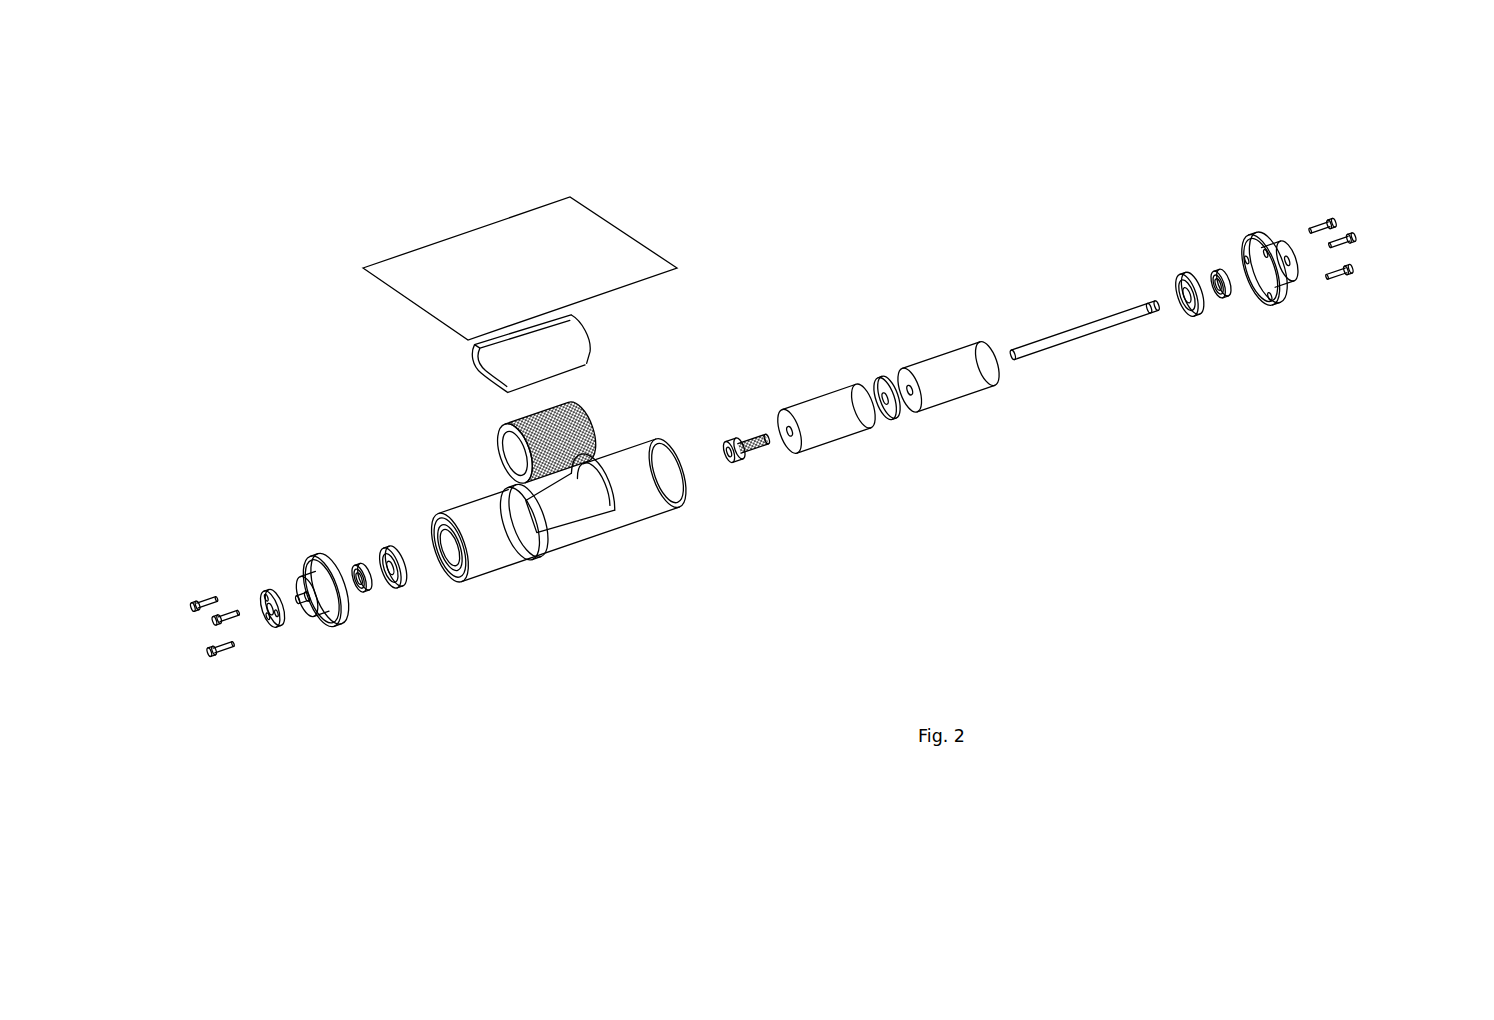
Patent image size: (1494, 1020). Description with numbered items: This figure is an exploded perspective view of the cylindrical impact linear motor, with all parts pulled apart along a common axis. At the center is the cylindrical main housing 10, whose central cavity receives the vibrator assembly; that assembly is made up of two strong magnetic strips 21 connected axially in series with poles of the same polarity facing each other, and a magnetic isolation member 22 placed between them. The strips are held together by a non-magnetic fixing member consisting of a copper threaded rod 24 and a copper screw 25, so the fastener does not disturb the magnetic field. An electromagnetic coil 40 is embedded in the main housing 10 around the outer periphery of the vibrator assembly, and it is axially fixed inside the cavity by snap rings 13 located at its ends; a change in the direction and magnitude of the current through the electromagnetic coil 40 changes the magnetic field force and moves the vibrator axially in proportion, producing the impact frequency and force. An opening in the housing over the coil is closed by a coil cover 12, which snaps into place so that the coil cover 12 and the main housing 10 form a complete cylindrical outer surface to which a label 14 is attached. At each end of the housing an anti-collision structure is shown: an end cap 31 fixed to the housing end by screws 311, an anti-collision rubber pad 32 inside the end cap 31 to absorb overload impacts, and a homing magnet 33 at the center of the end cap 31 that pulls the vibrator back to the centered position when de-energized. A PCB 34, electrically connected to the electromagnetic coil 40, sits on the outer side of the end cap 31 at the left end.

The main housing 10 is at (579, 532).
The coil cover 12 is at (476, 358).
The snap ring 13 is at (538, 532).
The label 14 is at (621, 272).
The strong magnetic strip 21 is at (838, 447).
The magnetic isolation member 22 is at (888, 370).
The copper threaded rod 24 is at (1037, 335).
The copper screw 25 is at (758, 468).
The end cap 31 is at (288, 552).
The screw 311 is at (186, 602).
The anti-collision rubber pad 32 is at (382, 532).
The homing magnet 33 is at (373, 600).
The PCB 34 is at (290, 633).
The electromagnetic coil 40 is at (601, 423).